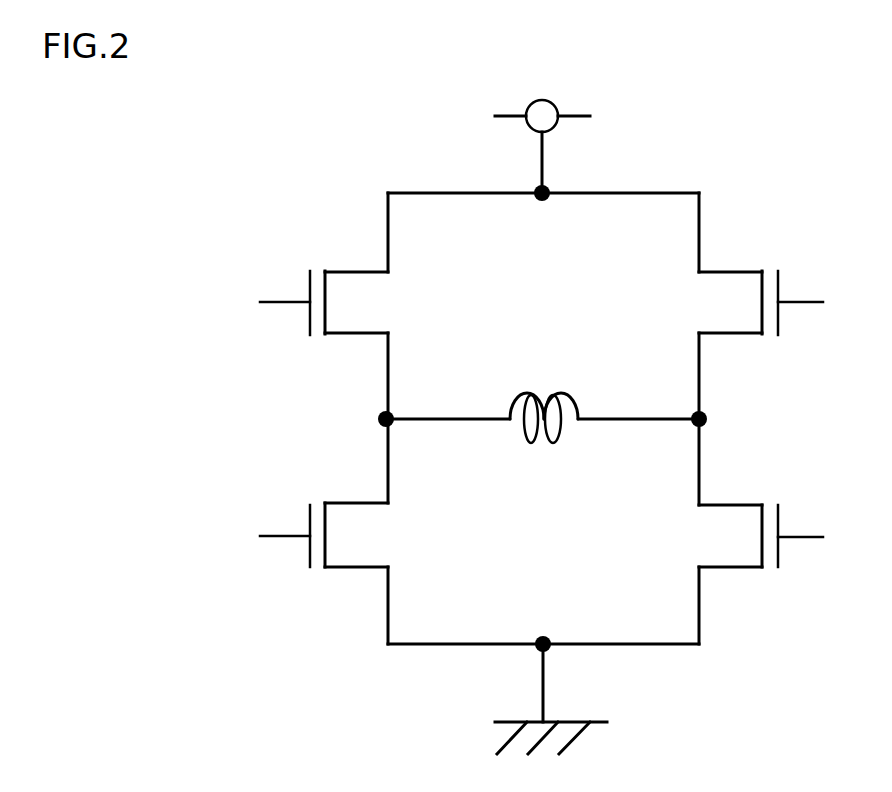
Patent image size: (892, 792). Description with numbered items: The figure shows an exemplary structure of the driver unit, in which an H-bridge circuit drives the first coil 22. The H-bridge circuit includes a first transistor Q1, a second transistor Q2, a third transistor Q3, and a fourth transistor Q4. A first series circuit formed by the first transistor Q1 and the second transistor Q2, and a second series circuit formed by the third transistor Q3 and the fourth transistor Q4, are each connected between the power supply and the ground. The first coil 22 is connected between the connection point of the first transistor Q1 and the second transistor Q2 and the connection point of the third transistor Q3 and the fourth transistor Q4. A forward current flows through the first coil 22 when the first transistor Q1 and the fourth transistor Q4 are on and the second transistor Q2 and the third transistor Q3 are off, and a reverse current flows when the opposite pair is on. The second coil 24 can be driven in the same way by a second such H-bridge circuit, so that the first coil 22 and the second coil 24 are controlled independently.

The first transistor Q1 is at (324, 274).
The second transistor Q2 is at (324, 506).
The third transistor Q3 is at (761, 274).
The fourth transistor Q4 is at (761, 506).
The first coil 22 is at (542, 389).
The second coil 24 is at (542, 418).